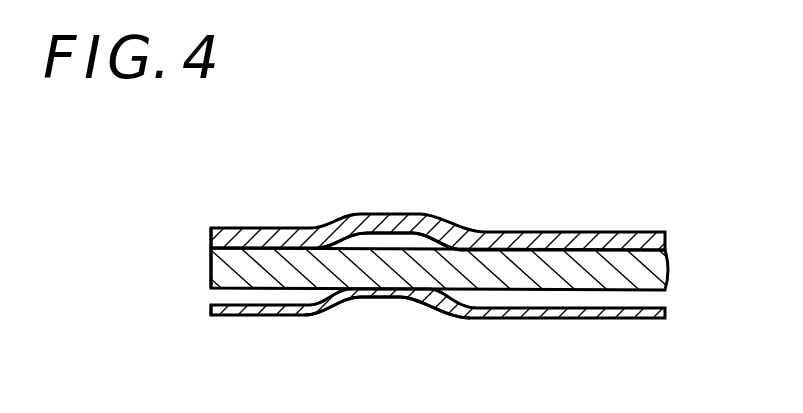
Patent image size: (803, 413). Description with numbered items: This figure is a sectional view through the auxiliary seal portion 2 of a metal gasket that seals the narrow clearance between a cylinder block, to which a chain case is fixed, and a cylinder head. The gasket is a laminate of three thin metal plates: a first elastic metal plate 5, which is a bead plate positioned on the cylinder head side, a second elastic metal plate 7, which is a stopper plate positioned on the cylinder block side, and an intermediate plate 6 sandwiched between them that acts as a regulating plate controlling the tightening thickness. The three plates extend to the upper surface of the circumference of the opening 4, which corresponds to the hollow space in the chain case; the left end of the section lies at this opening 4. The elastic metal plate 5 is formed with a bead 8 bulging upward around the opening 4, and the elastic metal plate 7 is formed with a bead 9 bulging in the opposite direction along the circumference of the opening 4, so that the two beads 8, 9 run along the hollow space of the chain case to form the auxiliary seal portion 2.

The auxiliary seal portion 2 is at (445, 254).
The opening 4 is at (212, 263).
The first elastic metal plate 5 is at (500, 231).
The intermediate plate 6 is at (630, 273).
The second elastic metal plate 7 is at (543, 320).
The bead 8 is at (345, 223).
The bead 9 is at (438, 305).